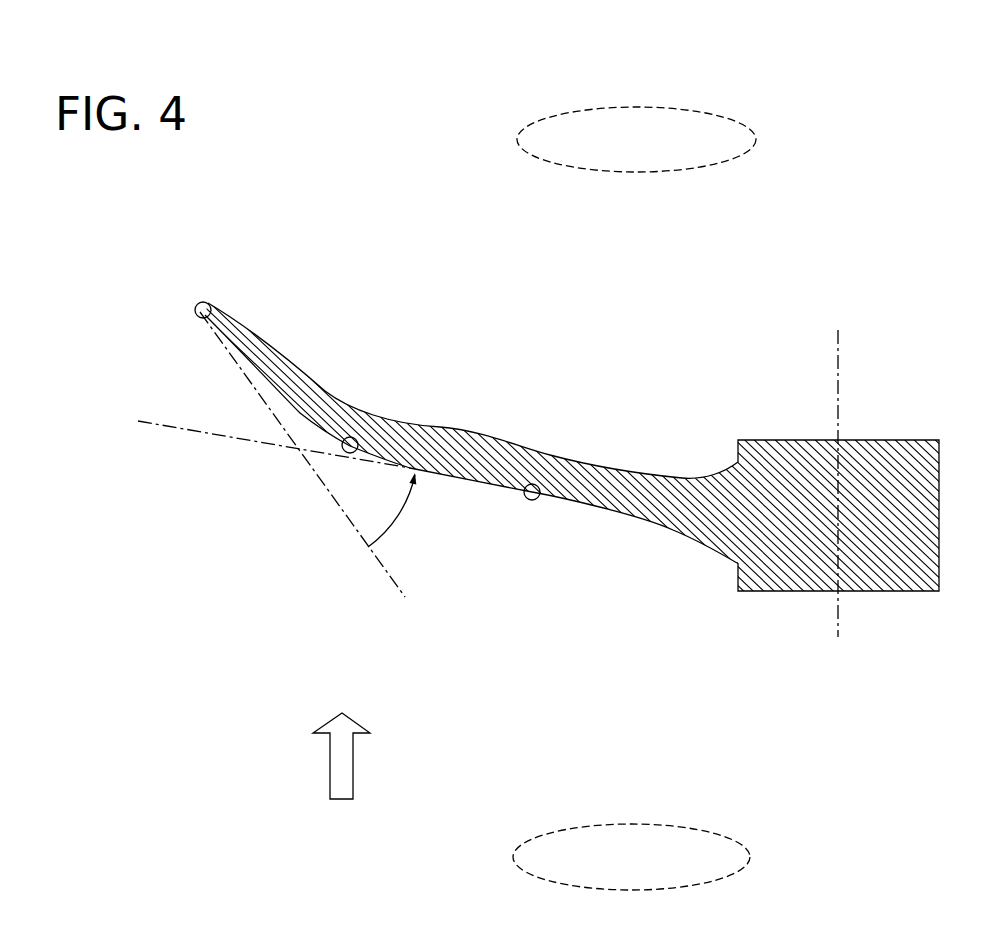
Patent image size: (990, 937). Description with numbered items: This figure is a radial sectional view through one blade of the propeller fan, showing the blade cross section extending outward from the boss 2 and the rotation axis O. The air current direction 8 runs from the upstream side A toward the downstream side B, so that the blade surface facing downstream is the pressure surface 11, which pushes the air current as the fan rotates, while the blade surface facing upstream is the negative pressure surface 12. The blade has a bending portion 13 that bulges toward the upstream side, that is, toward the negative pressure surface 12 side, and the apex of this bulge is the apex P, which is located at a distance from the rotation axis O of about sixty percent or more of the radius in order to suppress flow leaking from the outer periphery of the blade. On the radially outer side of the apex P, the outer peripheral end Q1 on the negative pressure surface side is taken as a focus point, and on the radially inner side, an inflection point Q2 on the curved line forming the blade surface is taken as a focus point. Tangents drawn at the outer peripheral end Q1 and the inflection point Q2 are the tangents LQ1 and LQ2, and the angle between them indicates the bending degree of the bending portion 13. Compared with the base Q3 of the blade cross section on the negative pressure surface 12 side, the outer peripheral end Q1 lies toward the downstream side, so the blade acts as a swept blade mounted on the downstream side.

The boss 2 is at (772, 440).
The air current direction 8 is at (330, 765).
The pressure surface 11 is at (620, 467).
The negative pressure surface 12 is at (622, 512).
The bending portion 13 is at (388, 418).
The outer peripheral end Q1 is at (206, 302).
The inflection point Q2 is at (532, 501).
The base Q3 is at (737, 567).
The apex P is at (349, 437).
The rotation axis O is at (840, 380).
The tangent LQ1 is at (320, 476).
The tangent LQ2 is at (244, 437).
The upstream side A is at (631, 857).
The downstream side B is at (636, 139).